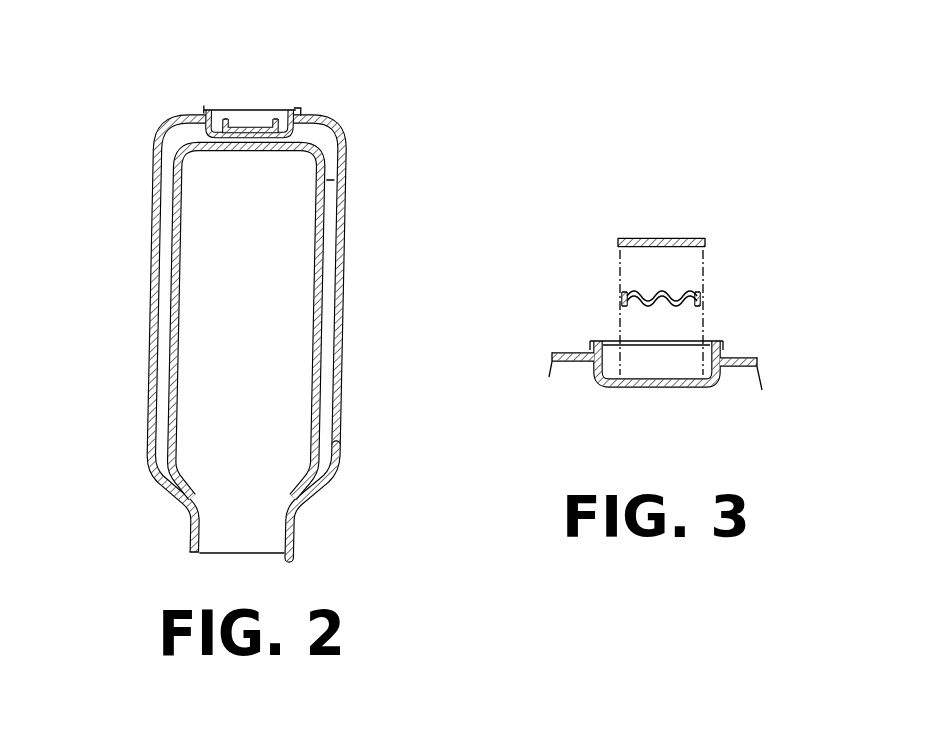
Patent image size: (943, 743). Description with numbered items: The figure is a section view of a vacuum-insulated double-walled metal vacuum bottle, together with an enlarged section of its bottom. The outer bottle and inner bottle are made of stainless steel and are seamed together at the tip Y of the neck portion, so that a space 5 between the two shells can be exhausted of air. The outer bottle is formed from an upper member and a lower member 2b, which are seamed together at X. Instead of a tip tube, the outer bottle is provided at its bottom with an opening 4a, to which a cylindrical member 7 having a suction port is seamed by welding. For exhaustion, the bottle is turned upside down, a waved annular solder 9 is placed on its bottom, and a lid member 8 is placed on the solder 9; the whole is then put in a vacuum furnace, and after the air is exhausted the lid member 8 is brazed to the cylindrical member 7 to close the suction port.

In FIG. 3, the lower member 2b is at (743, 357).
In FIG. 3, the opening 4a is at (597, 340).
In FIG. 2, the space 5 is at (332, 208).
In FIG. 3, the cylindrical member 7 is at (610, 388).
In FIG. 2, the lid member 8 is at (250, 187).
In FIG. 3, the lid member 8 is at (690, 240).
In FIG. 3, the waved annular solder 9 is at (683, 293).
In FIG. 2, the seam between upper and lower members X is at (168, 173).
In FIG. 2, the tip of neck portion Y is at (297, 562).